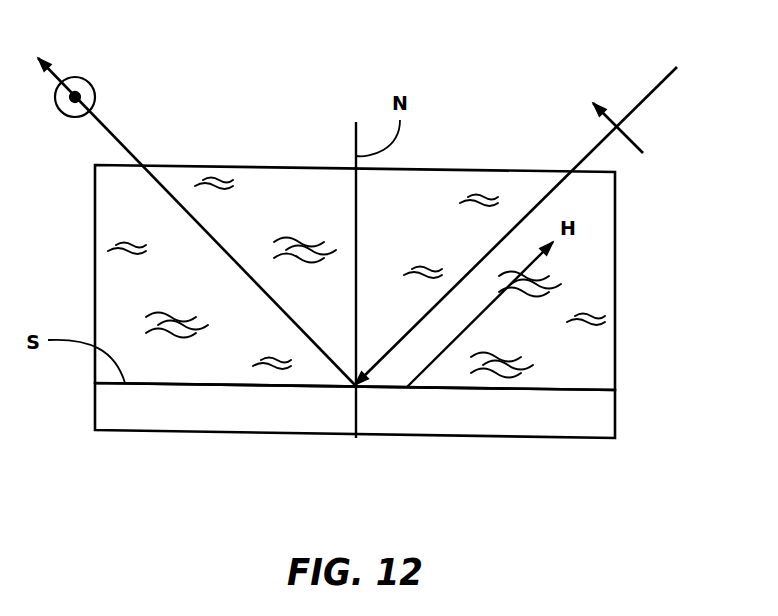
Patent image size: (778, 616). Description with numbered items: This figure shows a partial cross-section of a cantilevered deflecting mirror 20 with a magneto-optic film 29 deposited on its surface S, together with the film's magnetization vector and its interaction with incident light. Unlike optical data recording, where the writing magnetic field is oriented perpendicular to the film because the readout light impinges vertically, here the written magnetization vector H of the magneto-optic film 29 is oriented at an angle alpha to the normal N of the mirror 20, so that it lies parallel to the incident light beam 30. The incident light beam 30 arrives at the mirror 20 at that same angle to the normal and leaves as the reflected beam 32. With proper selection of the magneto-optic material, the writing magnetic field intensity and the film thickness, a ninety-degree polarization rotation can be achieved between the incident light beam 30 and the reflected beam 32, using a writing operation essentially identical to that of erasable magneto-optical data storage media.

The mirror 20 is at (205, 422).
The magneto-optic film 29 is at (447, 188).
The incident light beam 30 is at (590, 150).
The reflected beam 32 is at (123, 145).